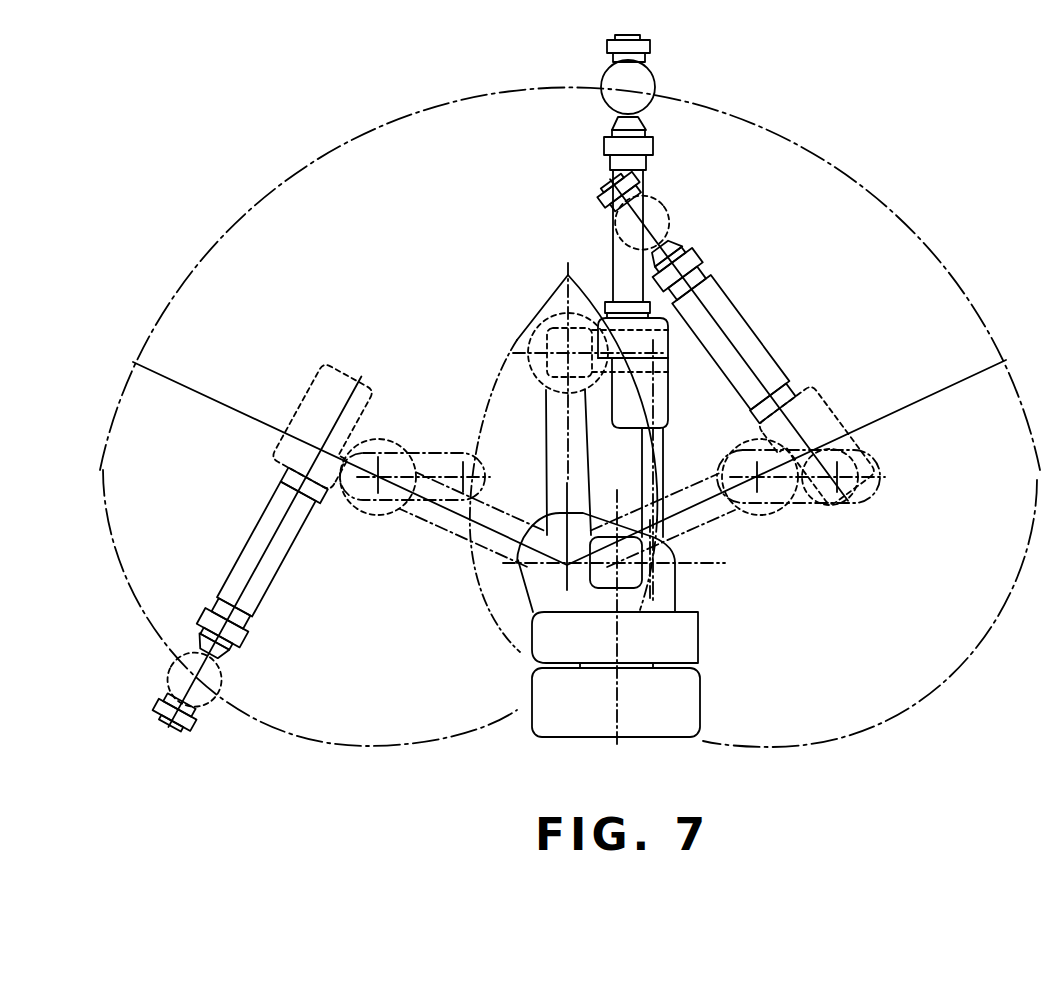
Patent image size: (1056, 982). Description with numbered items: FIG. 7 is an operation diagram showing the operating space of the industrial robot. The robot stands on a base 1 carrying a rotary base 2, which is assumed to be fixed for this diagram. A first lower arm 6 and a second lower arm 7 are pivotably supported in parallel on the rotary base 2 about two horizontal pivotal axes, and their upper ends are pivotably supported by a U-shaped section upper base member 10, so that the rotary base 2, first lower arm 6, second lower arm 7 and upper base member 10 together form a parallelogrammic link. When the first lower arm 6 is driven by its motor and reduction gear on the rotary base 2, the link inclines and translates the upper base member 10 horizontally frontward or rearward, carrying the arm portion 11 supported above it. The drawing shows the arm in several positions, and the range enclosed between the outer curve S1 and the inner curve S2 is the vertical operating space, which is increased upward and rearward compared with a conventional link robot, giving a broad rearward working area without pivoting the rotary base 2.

The base 1 is at (700, 703).
The rotary base 2 is at (677, 592).
The first lower arm 6 is at (552, 428).
The second lower arm 7 is at (667, 453).
The upper base member 10 is at (668, 352).
The wrist arm 11 is at (613, 237).
The outer curve S1 is at (298, 168).
The inner curve S2 is at (506, 365).